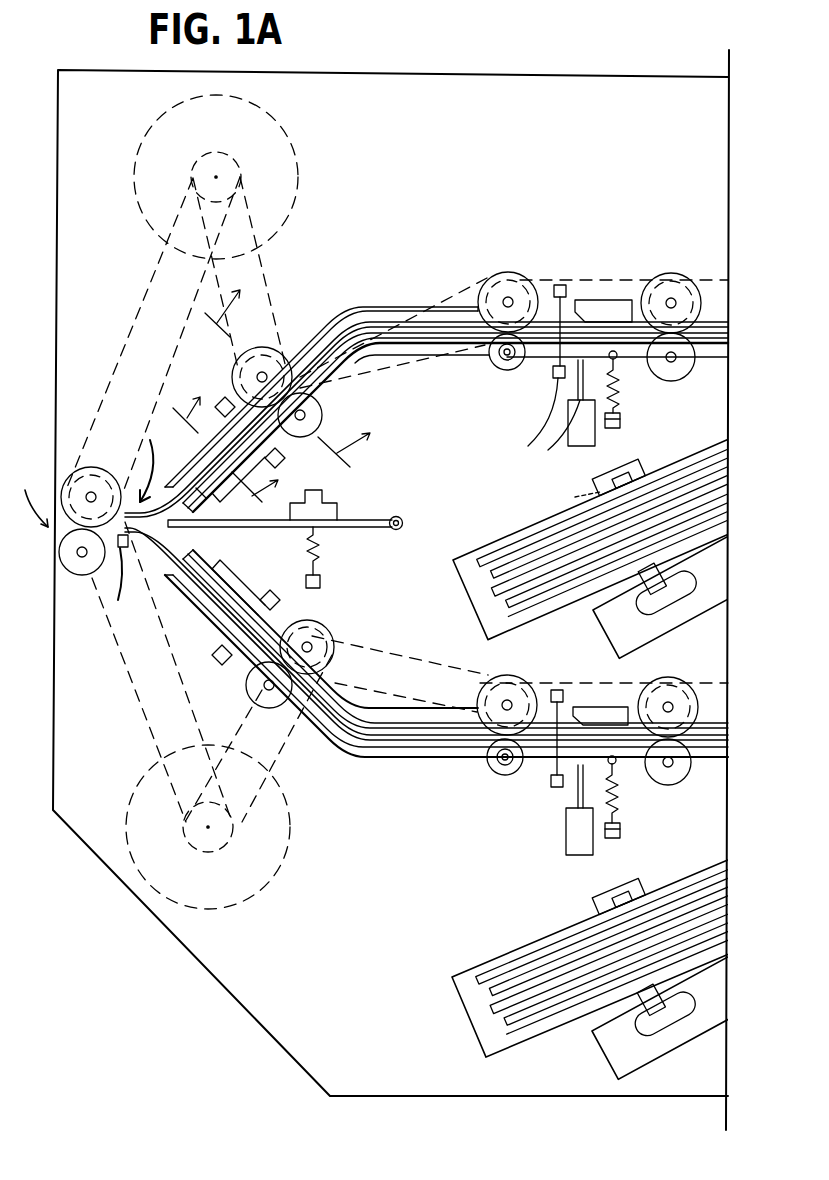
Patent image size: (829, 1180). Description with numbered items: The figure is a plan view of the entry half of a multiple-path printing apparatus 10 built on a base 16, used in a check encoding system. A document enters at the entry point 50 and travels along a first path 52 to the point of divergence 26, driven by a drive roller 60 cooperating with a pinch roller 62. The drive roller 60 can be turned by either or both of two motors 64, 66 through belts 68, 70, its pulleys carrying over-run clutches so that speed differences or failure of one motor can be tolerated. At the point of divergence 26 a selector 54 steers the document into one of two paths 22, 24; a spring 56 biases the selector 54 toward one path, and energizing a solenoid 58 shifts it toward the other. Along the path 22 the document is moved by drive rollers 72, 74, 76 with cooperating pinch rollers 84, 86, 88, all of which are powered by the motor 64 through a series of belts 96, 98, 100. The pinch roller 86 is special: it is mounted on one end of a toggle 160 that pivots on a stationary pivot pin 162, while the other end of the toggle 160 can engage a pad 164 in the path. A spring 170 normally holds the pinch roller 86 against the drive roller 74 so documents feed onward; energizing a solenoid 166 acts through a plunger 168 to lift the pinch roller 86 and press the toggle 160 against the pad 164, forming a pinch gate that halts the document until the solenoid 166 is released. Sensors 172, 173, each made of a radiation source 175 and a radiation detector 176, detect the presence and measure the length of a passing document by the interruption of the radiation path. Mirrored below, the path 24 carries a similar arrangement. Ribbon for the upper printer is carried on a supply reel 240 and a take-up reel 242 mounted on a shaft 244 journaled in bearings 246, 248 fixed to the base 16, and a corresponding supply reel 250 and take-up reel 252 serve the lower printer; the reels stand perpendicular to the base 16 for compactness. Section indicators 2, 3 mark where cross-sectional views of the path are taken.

The printing apparatus 10 is at (468, 66).
The base 16 is at (262, 1020).
The path 22 is at (355, 295).
The path 24 is at (340, 765).
The point of divergence 26 is at (140, 471).
The entry point 50 is at (28, 497).
The first path 52 is at (120, 575).
The selector 54 is at (190, 540).
The spring 56 is at (322, 552).
The solenoid 58 is at (318, 500).
The drive roller 60 is at (83, 468).
The pinch roller 62 is at (78, 575).
The motor 64 is at (290, 145).
The motor 66 is at (290, 852).
The belt 68 is at (150, 270).
The belt 70 is at (132, 700).
The drive roller 72 is at (263, 345).
The drive roller 74 is at (495, 280).
The drive roller 76 is at (672, 275).
The pinch roller 84 is at (317, 410).
The pinch roller 86 is at (490, 362).
The pinch roller 88 is at (678, 370).
The belt 96 is at (262, 262).
The belt 98 is at (437, 298).
The belt 100 is at (594, 275).
The toggle 160 is at (545, 378).
The pivot pin 162 is at (540, 372).
The pad 164 is at (605, 300).
The solenoid 166 is at (596, 436).
The plunger 168 is at (545, 455).
The spring 170 is at (618, 392).
The sensor 172 is at (210, 395).
The sensor 173 is at (548, 283).
The radiation source 175 is at (560, 285).
The radiation detector 176 is at (535, 440).
The supply reel 240 is at (490, 585).
The take-up reel 242 is at (495, 612).
The shaft 244 is at (620, 485).
The bearing 246 is at (566, 494).
The bearing 248 is at (600, 610).
The supply reel 250 is at (515, 985).
The take-up reel 252 is at (525, 1020).
The section line 2 is at (232, 441).
The section line 3 is at (294, 374).